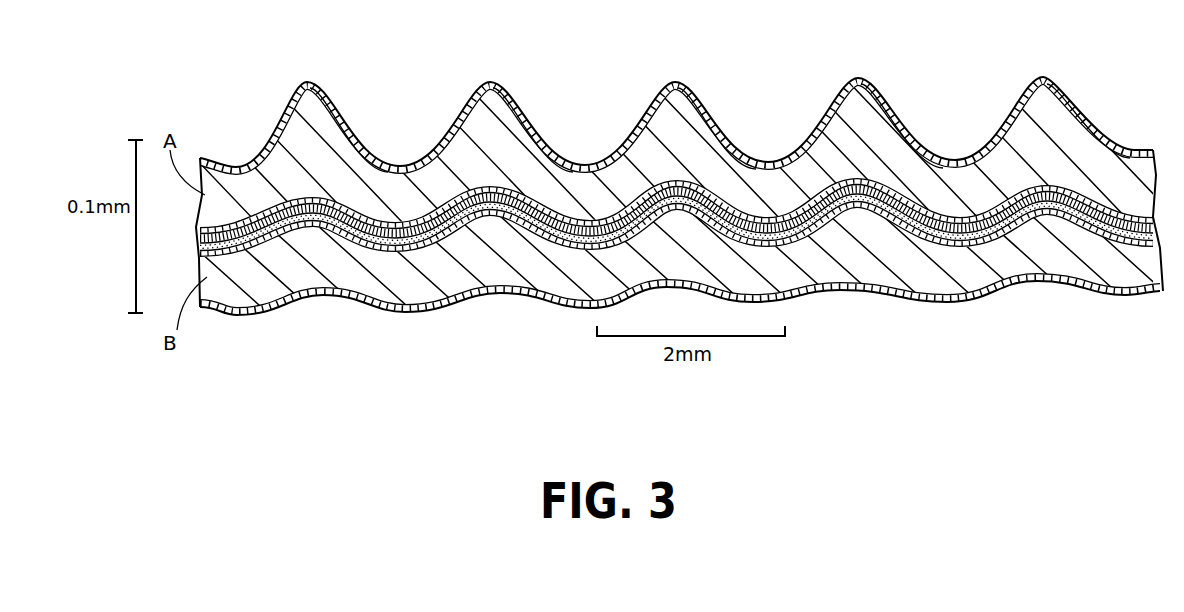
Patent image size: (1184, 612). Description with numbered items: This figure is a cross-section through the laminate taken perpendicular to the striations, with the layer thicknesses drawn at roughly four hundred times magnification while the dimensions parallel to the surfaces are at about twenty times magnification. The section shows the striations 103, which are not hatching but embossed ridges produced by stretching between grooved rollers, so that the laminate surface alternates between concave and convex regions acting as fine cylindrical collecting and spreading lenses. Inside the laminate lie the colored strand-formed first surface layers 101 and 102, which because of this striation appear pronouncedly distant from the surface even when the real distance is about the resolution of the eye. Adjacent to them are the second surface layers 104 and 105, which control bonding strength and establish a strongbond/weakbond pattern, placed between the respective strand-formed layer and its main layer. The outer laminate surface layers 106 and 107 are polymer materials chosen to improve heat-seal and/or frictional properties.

The strand-formed first surface layer 101 is at (812, 190).
The strand-formed first surface layer 102 is at (830, 217).
The striations 103 is at (862, 97).
The second surface layer 104 is at (848, 135).
The second surface layer 105 is at (797, 240).
The laminate surface layer 106 is at (700, 106).
The laminate surface layer 107 is at (947, 300).